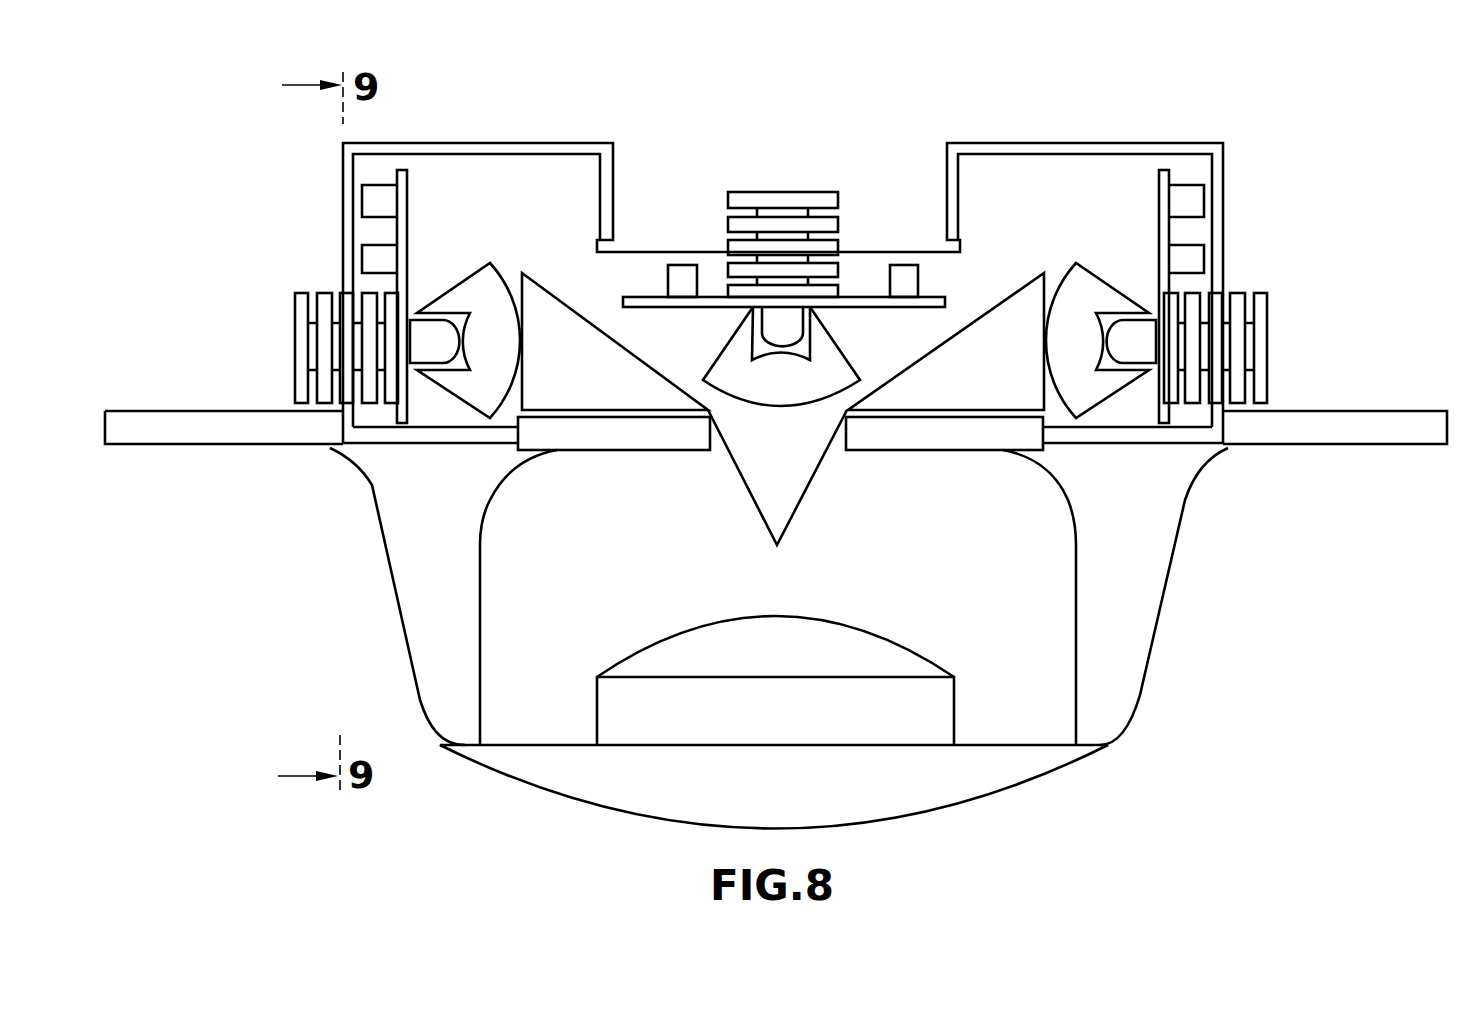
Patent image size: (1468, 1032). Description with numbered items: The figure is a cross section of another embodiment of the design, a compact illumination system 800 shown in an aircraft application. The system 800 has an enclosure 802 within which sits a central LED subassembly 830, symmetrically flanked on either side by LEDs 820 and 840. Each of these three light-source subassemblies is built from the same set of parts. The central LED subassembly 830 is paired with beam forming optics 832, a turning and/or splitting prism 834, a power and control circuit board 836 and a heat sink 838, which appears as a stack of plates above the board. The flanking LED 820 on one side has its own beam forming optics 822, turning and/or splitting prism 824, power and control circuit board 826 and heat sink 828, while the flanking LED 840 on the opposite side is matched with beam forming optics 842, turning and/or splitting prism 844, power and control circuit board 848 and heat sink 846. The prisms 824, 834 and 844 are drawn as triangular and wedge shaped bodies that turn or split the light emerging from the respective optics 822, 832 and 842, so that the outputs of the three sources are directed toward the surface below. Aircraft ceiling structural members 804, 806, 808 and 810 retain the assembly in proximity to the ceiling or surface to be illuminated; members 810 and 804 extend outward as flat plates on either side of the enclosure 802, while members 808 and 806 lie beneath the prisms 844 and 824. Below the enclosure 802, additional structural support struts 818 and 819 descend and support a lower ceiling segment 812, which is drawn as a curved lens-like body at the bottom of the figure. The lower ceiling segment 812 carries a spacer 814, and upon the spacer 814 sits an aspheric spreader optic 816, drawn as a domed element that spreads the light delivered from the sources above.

The compact illumination system 800 is at (1190, 90).
The enclosure 802 is at (432, 143).
The aircraft ceiling structural member 804 is at (1400, 411).
The aircraft ceiling structural member 806 is at (960, 448).
The aircraft ceiling structural member 808 is at (630, 448).
The aircraft ceiling structural member 810 is at (190, 411).
The lower ceiling segment 812 is at (798, 803).
The spacer 814 is at (798, 728).
The aspheric spreader optic 816 is at (798, 663).
The structural support strut 818 is at (1146, 604).
The structural support strut 819 is at (463, 604).
The LED 820 is at (1142, 343).
The beam forming optics 822 is at (1093, 354).
The turning and/or splitting prism 824 is at (1003, 391).
The power and control circuit board 826 is at (1157, 198).
The heat sink 828 is at (1270, 328).
The central LED subassembly 830 is at (806, 318).
The beam forming optics 832 is at (737, 362).
The turning and/or splitting prism 834 is at (808, 456).
The power and control circuit board 836 is at (640, 297).
The heat sink 838 is at (820, 192).
The LED 840 is at (424, 343).
The beam forming optics 842 is at (515, 354).
The turning and/or splitting prism 844 is at (588, 391).
The heat sink 846 is at (296, 322).
The power and control circuit board 848 is at (410, 196).